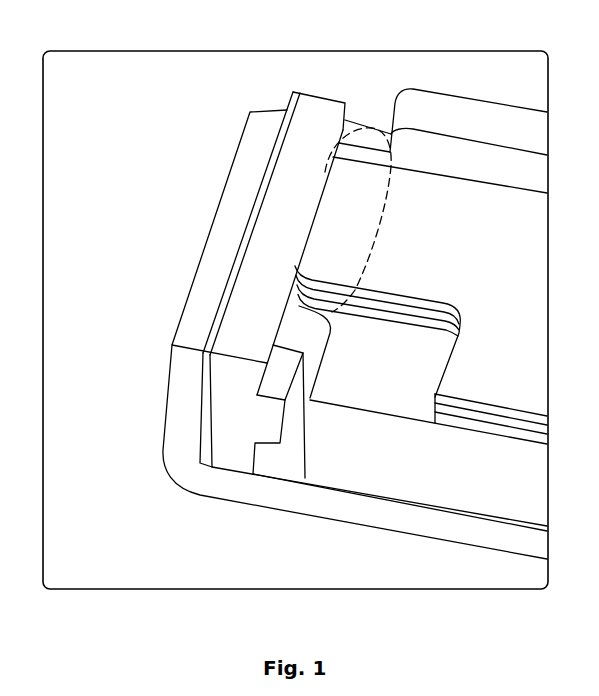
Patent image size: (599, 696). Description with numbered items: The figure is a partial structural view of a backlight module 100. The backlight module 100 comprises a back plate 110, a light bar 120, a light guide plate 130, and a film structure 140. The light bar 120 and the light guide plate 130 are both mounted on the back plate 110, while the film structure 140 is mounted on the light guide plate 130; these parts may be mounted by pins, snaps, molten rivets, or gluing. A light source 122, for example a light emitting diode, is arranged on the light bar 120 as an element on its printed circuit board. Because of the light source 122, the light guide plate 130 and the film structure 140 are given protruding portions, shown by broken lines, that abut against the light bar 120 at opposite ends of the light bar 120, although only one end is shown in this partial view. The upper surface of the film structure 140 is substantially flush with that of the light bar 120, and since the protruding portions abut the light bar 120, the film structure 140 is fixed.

The backlight module 100 is at (118, 93).
The back plate 110 is at (353, 506).
The light bar 120 is at (317, 107).
The light source 122 is at (283, 388).
The light guide plate 130 is at (430, 467).
The film structure 140 is at (452, 230).